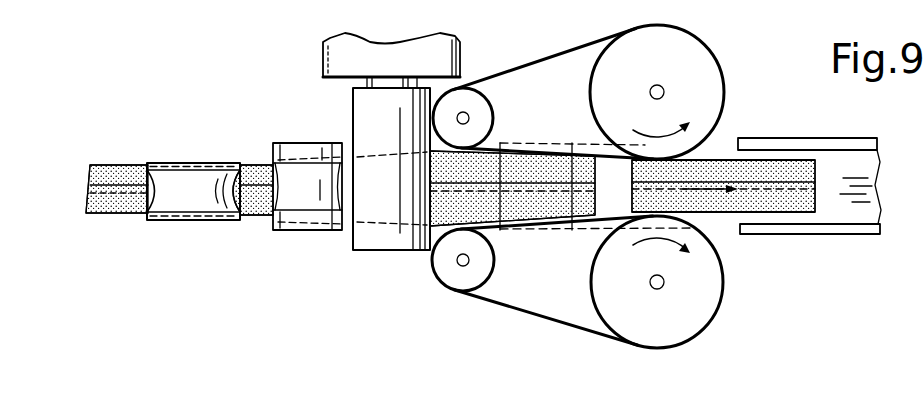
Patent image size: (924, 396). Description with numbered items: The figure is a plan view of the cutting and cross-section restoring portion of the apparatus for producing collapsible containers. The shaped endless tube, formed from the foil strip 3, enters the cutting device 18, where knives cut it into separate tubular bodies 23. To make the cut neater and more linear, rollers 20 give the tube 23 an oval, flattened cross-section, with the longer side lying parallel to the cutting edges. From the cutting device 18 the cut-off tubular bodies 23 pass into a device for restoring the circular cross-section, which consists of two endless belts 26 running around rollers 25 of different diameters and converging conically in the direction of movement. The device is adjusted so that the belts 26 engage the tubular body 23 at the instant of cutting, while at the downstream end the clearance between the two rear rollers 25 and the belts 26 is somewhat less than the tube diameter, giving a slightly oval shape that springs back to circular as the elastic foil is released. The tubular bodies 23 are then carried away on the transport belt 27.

The foil strip 3 is at (113, 213).
The cutting device 18 is at (333, 50).
The rollers 20 is at (237, 217).
The tube body 23 is at (747, 210).
The rollers 25 is at (680, 48).
The endless belts 26 is at (535, 62).
The transport belt 27 is at (830, 215).